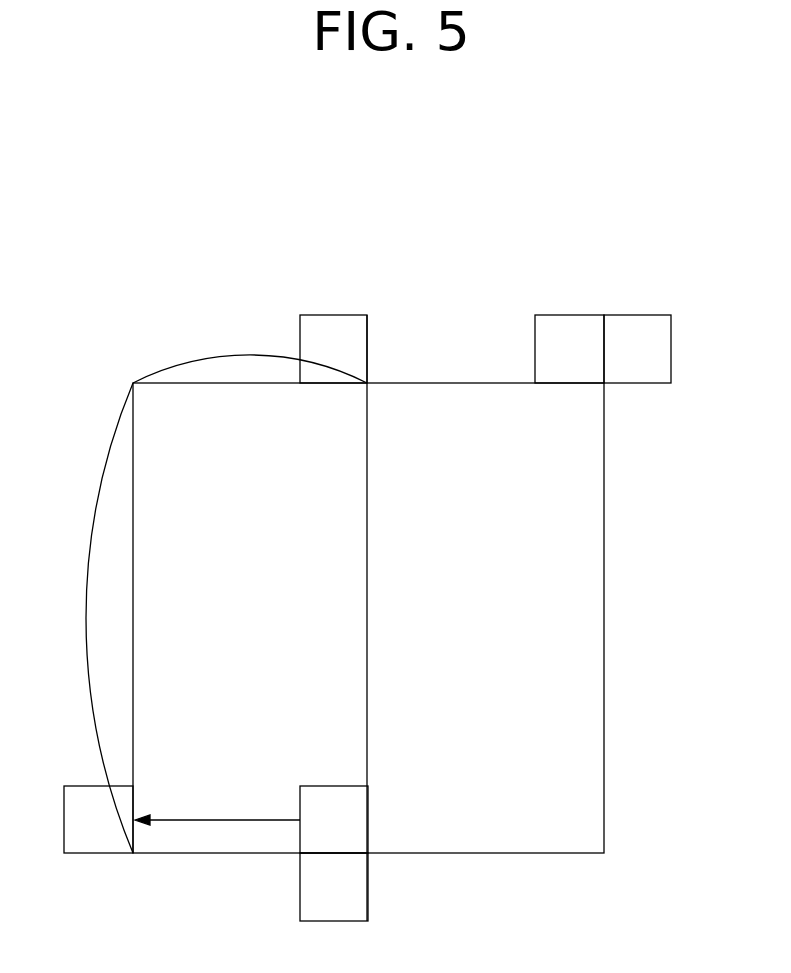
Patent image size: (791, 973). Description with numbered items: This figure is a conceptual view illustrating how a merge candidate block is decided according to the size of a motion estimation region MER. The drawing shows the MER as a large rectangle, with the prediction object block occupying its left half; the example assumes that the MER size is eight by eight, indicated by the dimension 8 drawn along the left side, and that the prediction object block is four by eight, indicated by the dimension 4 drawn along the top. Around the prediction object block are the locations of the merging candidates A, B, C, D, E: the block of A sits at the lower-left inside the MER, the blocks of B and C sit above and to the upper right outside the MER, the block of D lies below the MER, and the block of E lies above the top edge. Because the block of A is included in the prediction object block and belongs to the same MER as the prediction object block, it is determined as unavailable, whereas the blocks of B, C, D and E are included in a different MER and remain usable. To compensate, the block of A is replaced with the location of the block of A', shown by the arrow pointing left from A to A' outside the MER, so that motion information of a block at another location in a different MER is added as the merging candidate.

The prediction object block width 4 is at (250, 356).
The MER size 8 is at (95, 618).
The motion estimation region MER is at (368, 618).
The merging candidate block A is at (334, 819).
The replacement block A' is at (98, 819).
The merging candidate block B is at (569, 349).
The merging candidate block C is at (637, 349).
The merging candidate block D is at (334, 887).
The merging candidate block E is at (333, 349).